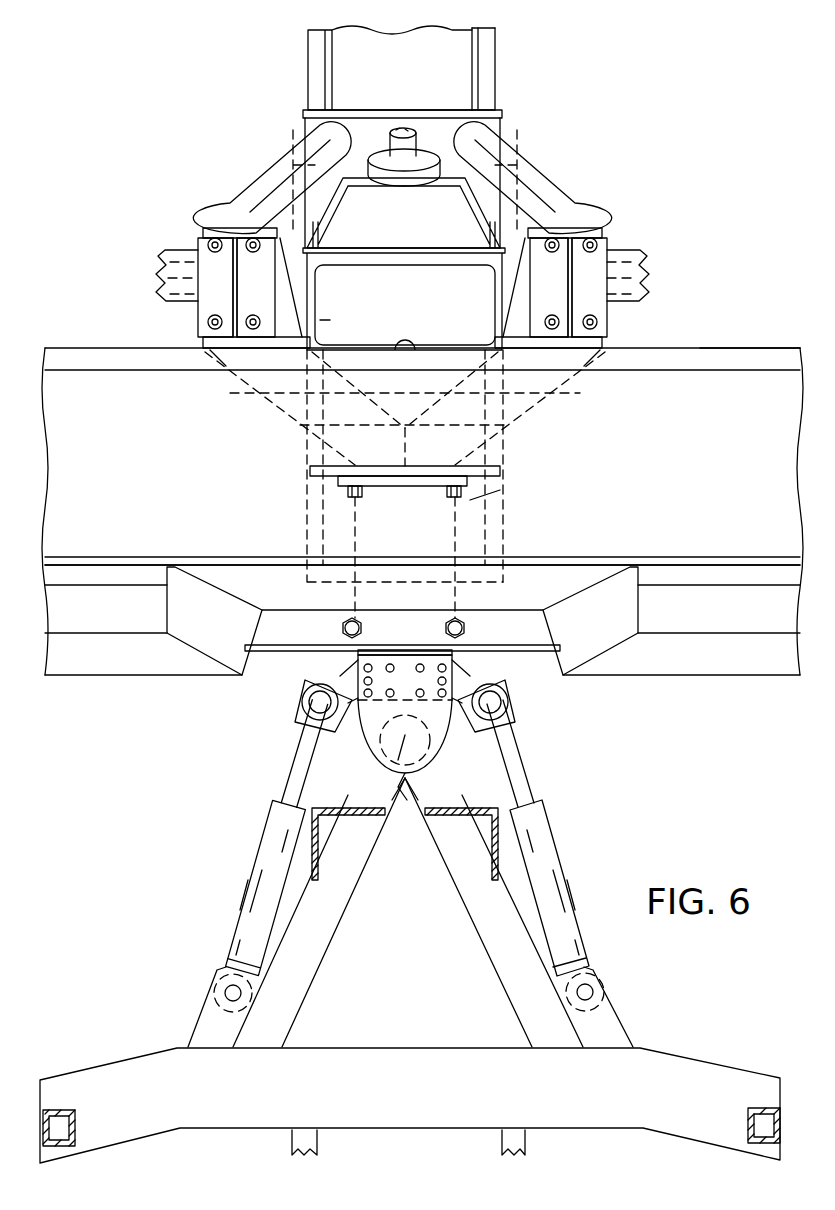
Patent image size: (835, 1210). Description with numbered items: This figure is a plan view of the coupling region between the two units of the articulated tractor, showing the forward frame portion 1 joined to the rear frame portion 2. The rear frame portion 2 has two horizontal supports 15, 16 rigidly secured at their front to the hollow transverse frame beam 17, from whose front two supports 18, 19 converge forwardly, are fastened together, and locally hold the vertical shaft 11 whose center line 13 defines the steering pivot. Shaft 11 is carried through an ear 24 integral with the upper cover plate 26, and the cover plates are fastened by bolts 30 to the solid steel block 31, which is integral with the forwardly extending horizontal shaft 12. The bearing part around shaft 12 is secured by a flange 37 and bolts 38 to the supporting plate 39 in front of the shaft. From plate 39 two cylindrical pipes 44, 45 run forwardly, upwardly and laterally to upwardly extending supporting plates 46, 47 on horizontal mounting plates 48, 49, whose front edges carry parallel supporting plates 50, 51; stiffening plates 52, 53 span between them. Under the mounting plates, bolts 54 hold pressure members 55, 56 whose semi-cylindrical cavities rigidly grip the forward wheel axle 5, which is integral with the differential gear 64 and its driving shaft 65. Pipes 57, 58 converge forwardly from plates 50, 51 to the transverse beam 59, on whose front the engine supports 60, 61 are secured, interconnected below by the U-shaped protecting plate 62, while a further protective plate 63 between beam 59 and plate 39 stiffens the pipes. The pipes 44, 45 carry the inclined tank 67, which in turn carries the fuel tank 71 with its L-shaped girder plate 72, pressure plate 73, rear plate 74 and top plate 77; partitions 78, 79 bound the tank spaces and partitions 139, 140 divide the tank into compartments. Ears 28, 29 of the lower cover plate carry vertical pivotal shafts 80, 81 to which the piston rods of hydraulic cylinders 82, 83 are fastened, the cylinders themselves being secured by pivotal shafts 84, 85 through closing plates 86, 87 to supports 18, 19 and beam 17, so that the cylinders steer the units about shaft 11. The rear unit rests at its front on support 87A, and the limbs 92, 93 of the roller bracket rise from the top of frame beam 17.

The forward frame portion 1 is at (511, 73).
The rear frame portion 2 is at (724, 1050).
The forward wheel axle 5 is at (178, 300).
The vertical shaft 11 is at (378, 738).
The horizontal shaft 12 is at (492, 508).
The center line 13 is at (396, 762).
The horizontal support 15 is at (500, 1146).
The horizontal support 16 is at (290, 1146).
The frame beam 17 is at (386, 1044).
The support 18 is at (502, 934).
The support 19 is at (345, 890).
The ear 24 is at (444, 722).
The upper cover plate 26 is at (402, 654).
The ear 28 is at (478, 678).
The ear 29 is at (336, 674).
The bolts 30 is at (446, 660).
The steel block 31 is at (366, 642).
The flange 37 is at (424, 494).
The bolts 38 is at (358, 525).
The supporting plate 39 is at (502, 470).
The cylindrical pipe 44 is at (250, 390).
The cylindrical pipe 45 is at (535, 386).
The supporting plate 46 is at (228, 366).
The supporting plate 47 is at (570, 358).
The mounting plate 48 is at (212, 256).
The mounting plate 49 is at (598, 262).
The supporting plate 50 is at (228, 200).
The supporting plate 51 is at (600, 205).
The stiffening plates 52 is at (237, 294).
The stiffening plates 53 is at (568, 274).
The bolts 54 is at (208, 322).
The pressure member 55 is at (336, 321).
The pressure member 56 is at (648, 298).
The pipe 57 is at (282, 158).
The pipe 58 is at (535, 170).
The transverse beam 59 is at (437, 118).
The support 60 is at (308, 50).
The support 61 is at (490, 45).
The U-shaped protecting plate 62 is at (345, 82).
The protective plate 63 is at (332, 188).
The differential gear 64 is at (446, 240).
The driving shaft 65 is at (150, 260).
The tank 67 is at (382, 278).
The fuel tank 71 is at (70, 337).
The supporting plate 72 is at (240, 582).
The pressure plate 73 is at (512, 624).
The plate 74 is at (105, 666).
The top plate 77 is at (704, 376).
The partition 78 is at (180, 604).
The partition 79 is at (628, 604).
The vertical pivotal shaft 80 is at (316, 702).
The vertical pivotal shaft 81 is at (494, 702).
The hydraulic cylinder 82 is at (257, 828).
The hydraulic cylinder 83 is at (572, 848).
The pivotal shaft 84 is at (225, 992).
The pivotal shaft 85 is at (592, 990).
The closing plate 86 is at (196, 1010).
The closing plate 87 is at (616, 1030).
The support 87A is at (370, 820).
The limb 92 is at (80, 1118).
The limb 93 is at (748, 1124).
The partition 139 is at (305, 522).
The partition 140 is at (503, 520).